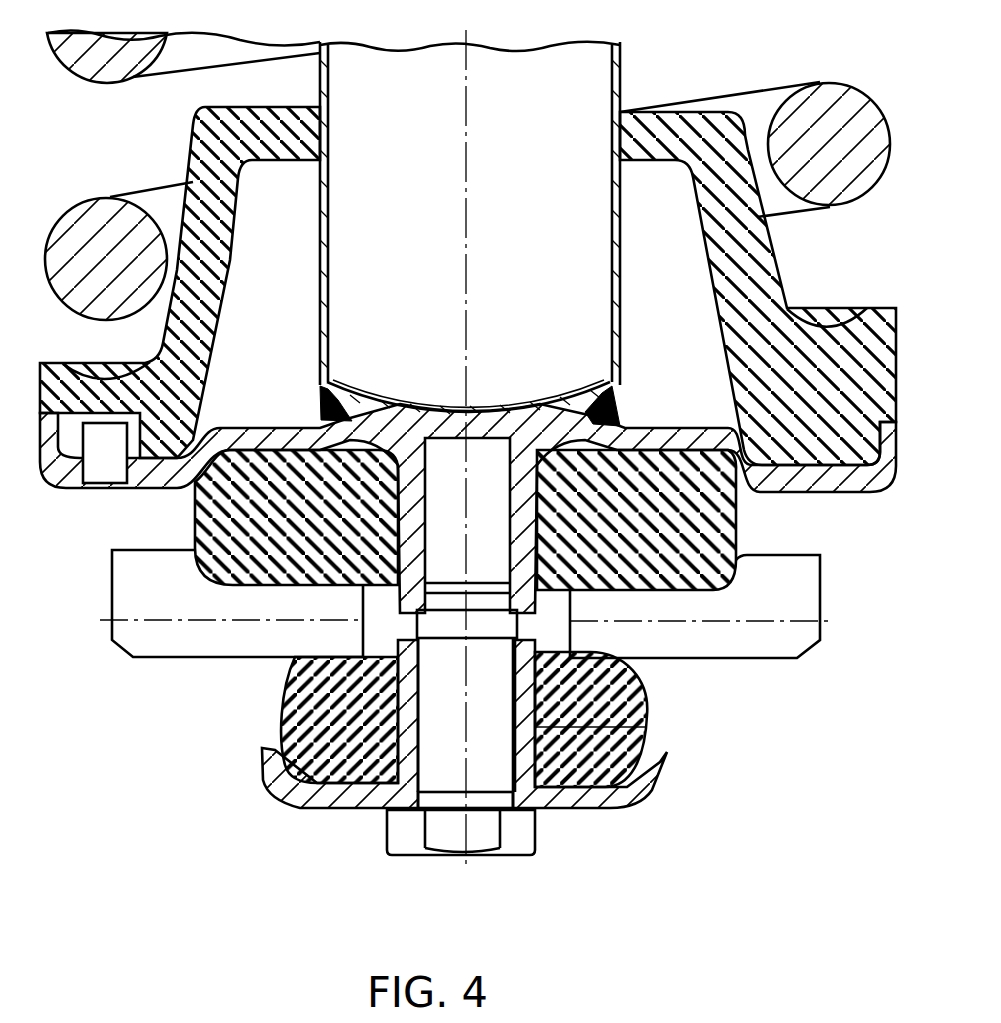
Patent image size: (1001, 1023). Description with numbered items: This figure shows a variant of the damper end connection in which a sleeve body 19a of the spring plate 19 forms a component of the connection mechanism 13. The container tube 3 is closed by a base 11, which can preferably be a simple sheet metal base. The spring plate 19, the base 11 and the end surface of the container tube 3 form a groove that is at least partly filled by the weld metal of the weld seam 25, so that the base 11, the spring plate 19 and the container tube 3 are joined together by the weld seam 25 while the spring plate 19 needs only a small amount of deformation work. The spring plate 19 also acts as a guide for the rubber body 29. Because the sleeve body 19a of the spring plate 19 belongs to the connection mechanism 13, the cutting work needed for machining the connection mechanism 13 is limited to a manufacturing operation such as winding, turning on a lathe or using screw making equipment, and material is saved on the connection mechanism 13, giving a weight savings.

The container tube 3 is at (320, 305).
The weld seam 25 is at (622, 410).
The spring plate 19 is at (238, 441).
The rubber body 29 is at (250, 563).
The base 11 is at (441, 425).
The connection mechanism 13 is at (670, 674).
The sleeve body 19a is at (650, 727).